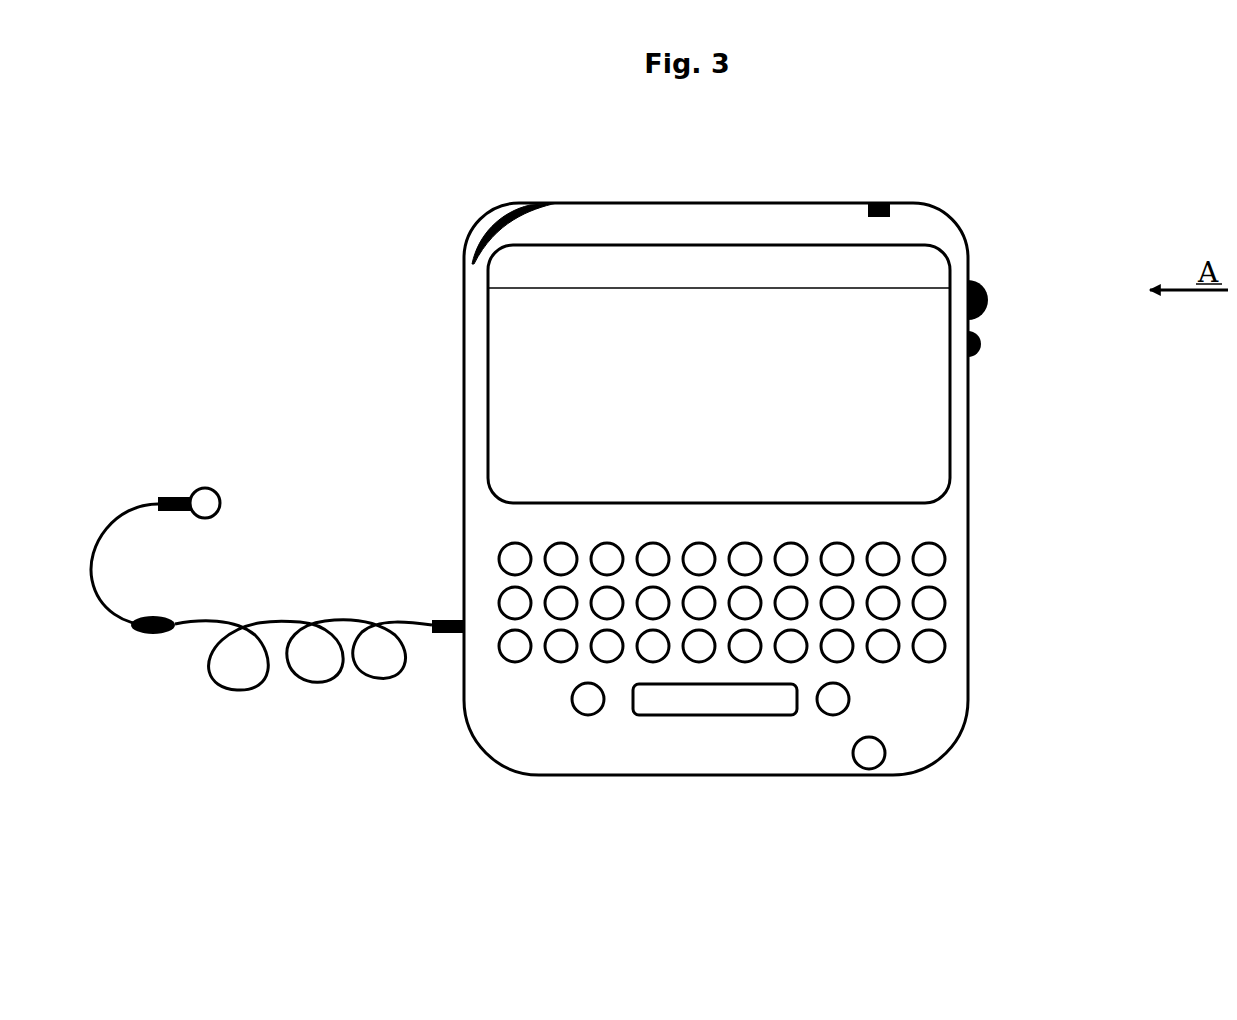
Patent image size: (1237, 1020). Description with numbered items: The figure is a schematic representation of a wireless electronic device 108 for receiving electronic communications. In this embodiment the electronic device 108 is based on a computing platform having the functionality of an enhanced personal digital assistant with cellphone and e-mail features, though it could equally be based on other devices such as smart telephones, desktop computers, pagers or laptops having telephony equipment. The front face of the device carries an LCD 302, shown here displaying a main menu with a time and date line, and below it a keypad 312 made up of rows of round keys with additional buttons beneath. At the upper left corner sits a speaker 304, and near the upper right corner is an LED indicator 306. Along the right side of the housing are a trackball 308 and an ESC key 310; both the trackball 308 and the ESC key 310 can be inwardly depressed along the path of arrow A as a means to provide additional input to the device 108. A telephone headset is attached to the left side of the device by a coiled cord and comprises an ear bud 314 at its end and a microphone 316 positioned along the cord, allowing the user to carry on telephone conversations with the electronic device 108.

The electronic device 108 is at (742, 540).
The LCD 302 is at (490, 488).
The speaker 304 is at (487, 222).
The LED indicator 306 is at (890, 212).
The trackball 308 is at (993, 298).
The ESC key 310 is at (988, 347).
The keypad 312 is at (955, 606).
The ear bud 314 is at (236, 501).
The microphone 316 is at (181, 616).